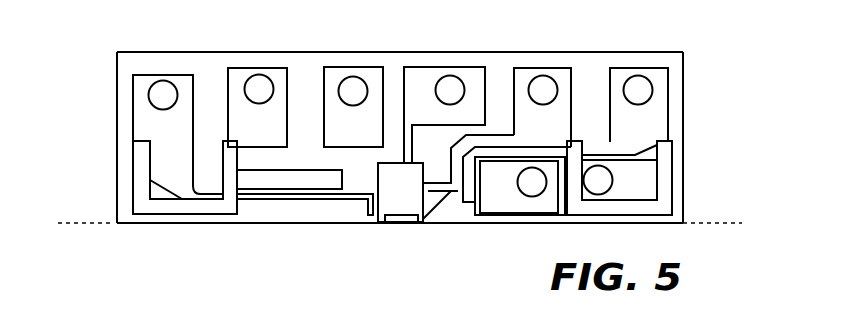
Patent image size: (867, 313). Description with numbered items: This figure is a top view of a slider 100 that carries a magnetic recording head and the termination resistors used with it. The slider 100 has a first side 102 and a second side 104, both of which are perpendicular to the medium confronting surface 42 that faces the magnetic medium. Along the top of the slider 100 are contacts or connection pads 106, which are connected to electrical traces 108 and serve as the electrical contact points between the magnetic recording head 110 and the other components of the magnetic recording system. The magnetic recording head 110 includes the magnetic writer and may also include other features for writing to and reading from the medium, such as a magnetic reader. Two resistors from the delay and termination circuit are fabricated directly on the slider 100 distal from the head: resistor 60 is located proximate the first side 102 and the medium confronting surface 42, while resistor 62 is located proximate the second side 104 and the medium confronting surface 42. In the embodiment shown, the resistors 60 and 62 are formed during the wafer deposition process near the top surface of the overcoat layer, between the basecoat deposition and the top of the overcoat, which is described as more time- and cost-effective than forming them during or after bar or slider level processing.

The slider 100 is at (688, 50).
The first side 102 is at (117, 143).
The second side 104 is at (683, 128).
The connection pads 106 is at (330, 72).
The electrical traces 108 is at (280, 182).
The magnetic recording head 110 is at (395, 222).
The resistor 60 is at (186, 218).
The resistor 62 is at (661, 178).
The medium confronting surface 42 is at (730, 222).